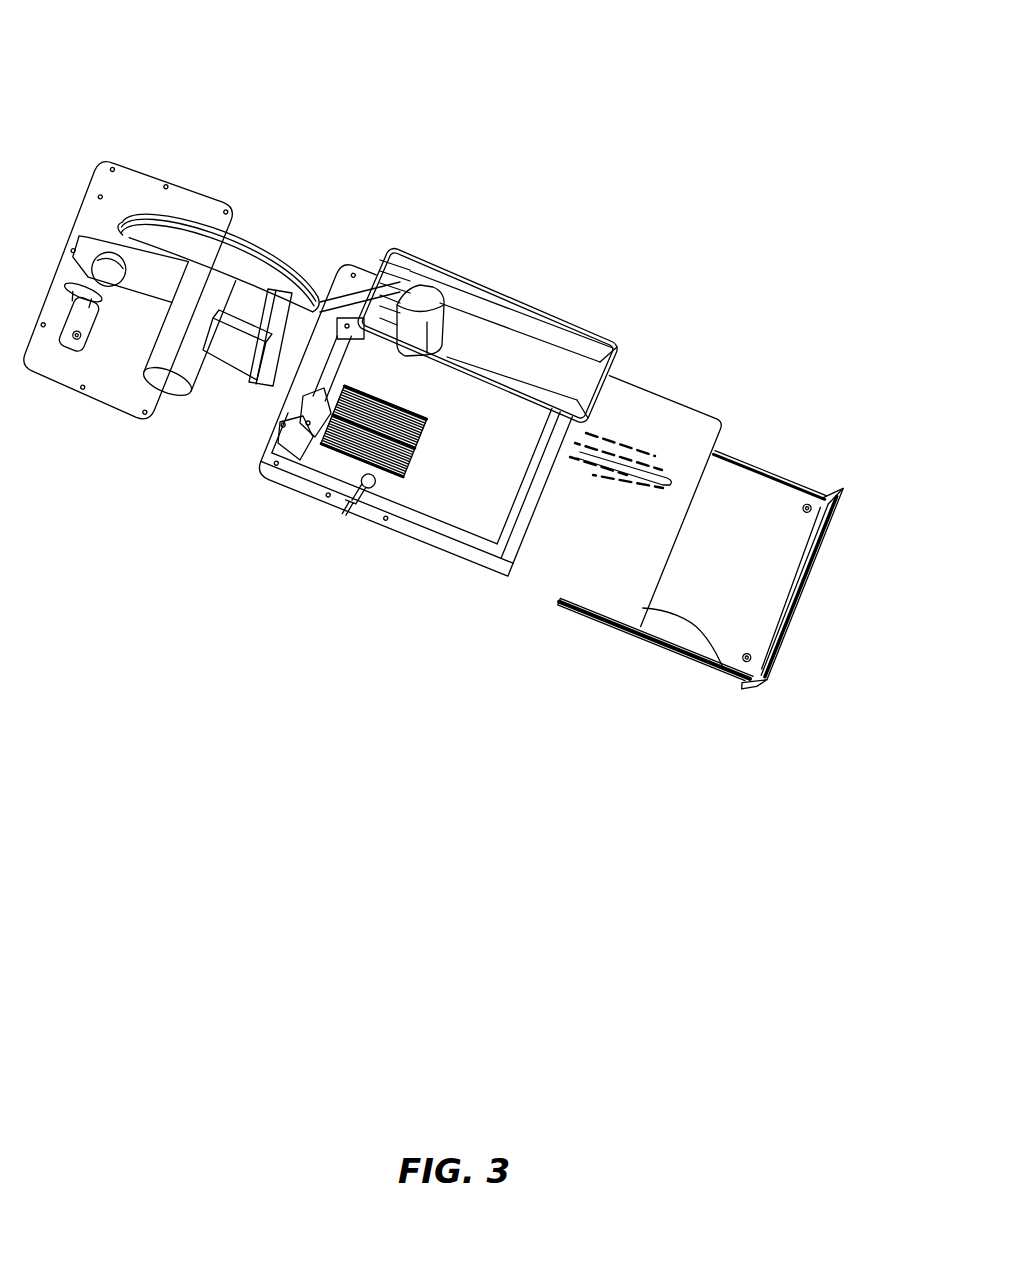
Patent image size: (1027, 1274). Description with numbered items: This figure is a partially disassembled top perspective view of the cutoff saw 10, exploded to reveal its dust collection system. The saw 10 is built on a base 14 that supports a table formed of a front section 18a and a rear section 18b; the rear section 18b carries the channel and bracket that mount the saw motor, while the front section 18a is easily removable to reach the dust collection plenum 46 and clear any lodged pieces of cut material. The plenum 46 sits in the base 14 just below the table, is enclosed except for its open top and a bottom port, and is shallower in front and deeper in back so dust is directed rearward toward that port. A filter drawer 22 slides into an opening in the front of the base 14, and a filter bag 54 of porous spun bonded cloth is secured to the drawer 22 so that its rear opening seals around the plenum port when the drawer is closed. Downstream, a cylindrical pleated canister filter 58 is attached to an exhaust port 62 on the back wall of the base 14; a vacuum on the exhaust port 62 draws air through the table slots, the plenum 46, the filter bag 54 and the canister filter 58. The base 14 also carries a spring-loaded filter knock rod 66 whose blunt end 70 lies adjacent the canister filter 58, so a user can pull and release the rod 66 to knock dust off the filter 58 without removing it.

The saw 10 is at (690, 153).
The base 14 is at (460, 478).
The front section of the table 18a is at (595, 532).
The rear section of the table 18b is at (183, 203).
The filter drawer 22 is at (787, 610).
The dust collection plenum 46 is at (505, 348).
The filter bag 54 is at (730, 530).
The canister filter 58 is at (347, 455).
The exhaust port 62 is at (317, 403).
The filter knock rod 66 is at (351, 503).
The blunt end 70 is at (359, 504).